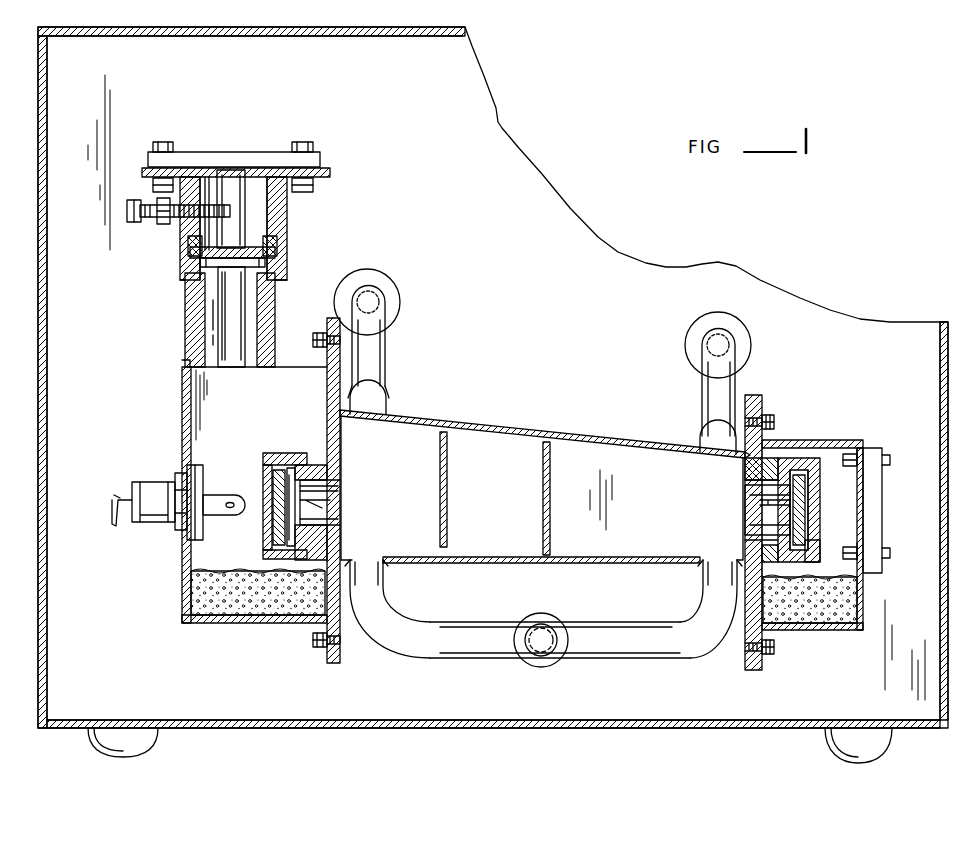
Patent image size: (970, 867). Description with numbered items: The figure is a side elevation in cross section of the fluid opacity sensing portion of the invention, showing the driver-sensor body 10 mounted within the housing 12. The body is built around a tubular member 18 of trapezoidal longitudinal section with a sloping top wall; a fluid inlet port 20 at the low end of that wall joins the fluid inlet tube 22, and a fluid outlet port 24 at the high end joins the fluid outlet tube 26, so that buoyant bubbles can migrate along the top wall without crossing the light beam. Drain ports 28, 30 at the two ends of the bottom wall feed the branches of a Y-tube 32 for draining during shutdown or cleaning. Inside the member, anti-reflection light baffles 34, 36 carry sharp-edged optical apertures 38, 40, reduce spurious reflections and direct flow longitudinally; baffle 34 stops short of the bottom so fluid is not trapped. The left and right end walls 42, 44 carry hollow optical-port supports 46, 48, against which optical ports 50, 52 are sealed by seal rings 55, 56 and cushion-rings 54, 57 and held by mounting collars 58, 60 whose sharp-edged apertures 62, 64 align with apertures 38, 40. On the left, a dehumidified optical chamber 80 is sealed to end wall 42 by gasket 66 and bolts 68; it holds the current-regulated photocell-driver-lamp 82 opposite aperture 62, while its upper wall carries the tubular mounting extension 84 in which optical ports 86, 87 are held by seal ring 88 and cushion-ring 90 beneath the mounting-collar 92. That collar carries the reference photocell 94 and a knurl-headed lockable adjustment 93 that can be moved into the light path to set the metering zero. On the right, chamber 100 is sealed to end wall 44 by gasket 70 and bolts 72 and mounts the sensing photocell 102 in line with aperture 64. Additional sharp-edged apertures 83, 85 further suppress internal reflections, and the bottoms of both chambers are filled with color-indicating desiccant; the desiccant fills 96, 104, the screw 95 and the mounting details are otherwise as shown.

The optical-fluid-opacity detecting driver-sensor body 10 is at (496, 392).
The housing 12 is at (487, 223).
The tubular member 18 is at (560, 430).
The fluid inlet port 20 is at (713, 451).
The fluid inlet tube 22 is at (710, 405).
The fluid outlet port 24 is at (378, 408).
The fluid outlet tube 26 is at (376, 349).
The drain port 28 is at (373, 557).
The drain port 30 is at (716, 560).
The Y-tube 32 is at (596, 645).
The anti-reflection light baffle 34 is at (447, 455).
The anti-reflection light baffle 36 is at (550, 460).
The optical aperture 38 is at (447, 522).
The optical aperture 40 is at (550, 522).
The left hand end wall 42 is at (335, 428).
The right hand end wall 44 is at (744, 452).
The optical-port support 46 is at (313, 453).
The optical-port support 48 is at (768, 547).
The optical port 50 is at (328, 524).
The optical port 52 is at (778, 517).
The compressible cushion-ring 54 is at (268, 455).
The fluid seal ring 55 is at (332, 486).
The fluid seal ring 56 is at (790, 458).
The compressible cushion-ring 57 is at (813, 467).
The mounting collar 58 is at (263, 549).
The mounting collar 60 is at (818, 556).
The optical aperture 62 is at (270, 494).
The optical aperture 64 is at (813, 497).
The gasket 66 is at (327, 390).
The bolts 68 is at (322, 340).
The gasket 70 is at (762, 395).
The bolts 72 is at (773, 420).
The optical chamber 80 is at (188, 368).
The photocell-driver-lamp 82 is at (249, 290).
The optical aperture 83 is at (328, 504).
The optical port mounting extension 84 is at (200, 313).
The optical aperture 85 is at (778, 494).
The optical port 86 is at (255, 246).
The optical port 87 is at (230, 210).
The fluid seal ring 88 is at (234, 270).
The compressible cushion-ring 90 is at (200, 247).
The optical port mounting-collar 92 is at (284, 207).
The lockable adjustment 93 is at (131, 223).
The photo-resistive photocell 94 is at (238, 168).
The adjusting screw 95 is at (160, 203).
The insulation 96 is at (189, 593).
The light-tight air tight chamber 100 is at (864, 613).
The photo-resistive photoelectric cell 102 is at (865, 520).
The insulation 104 is at (834, 613).